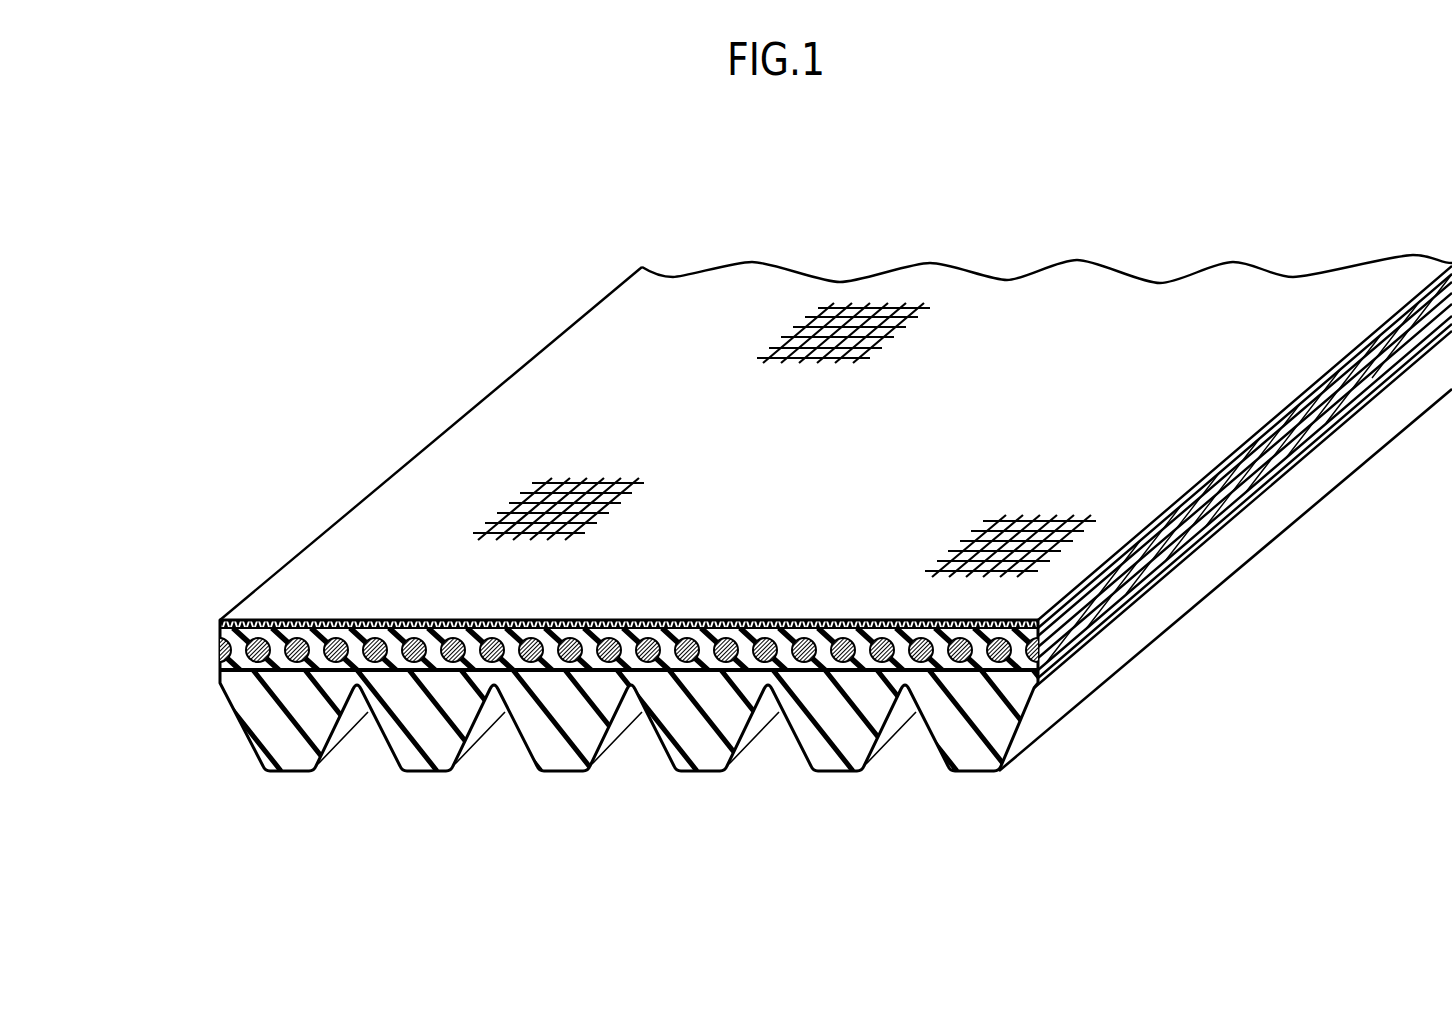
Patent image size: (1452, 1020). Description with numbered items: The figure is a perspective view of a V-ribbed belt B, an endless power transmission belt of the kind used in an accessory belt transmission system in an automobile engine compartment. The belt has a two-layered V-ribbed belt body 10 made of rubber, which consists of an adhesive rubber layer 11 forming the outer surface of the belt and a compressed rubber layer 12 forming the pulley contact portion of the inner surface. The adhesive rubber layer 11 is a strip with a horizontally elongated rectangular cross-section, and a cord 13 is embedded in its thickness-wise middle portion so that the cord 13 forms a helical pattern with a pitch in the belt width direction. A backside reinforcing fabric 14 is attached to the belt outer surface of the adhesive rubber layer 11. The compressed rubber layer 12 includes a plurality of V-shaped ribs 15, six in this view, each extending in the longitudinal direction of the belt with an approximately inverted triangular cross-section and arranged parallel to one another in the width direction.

The V-ribbed belt B is at (653, 188).
The V-ribbed belt body 10 is at (158, 629).
The adhesive rubber layer 11 is at (228, 665).
The compressed rubber layer 12 is at (240, 714).
The cord 13 is at (490, 636).
The backside reinforcing fabric 14 is at (690, 619).
The V-shaped ribs 15 is at (981, 752).